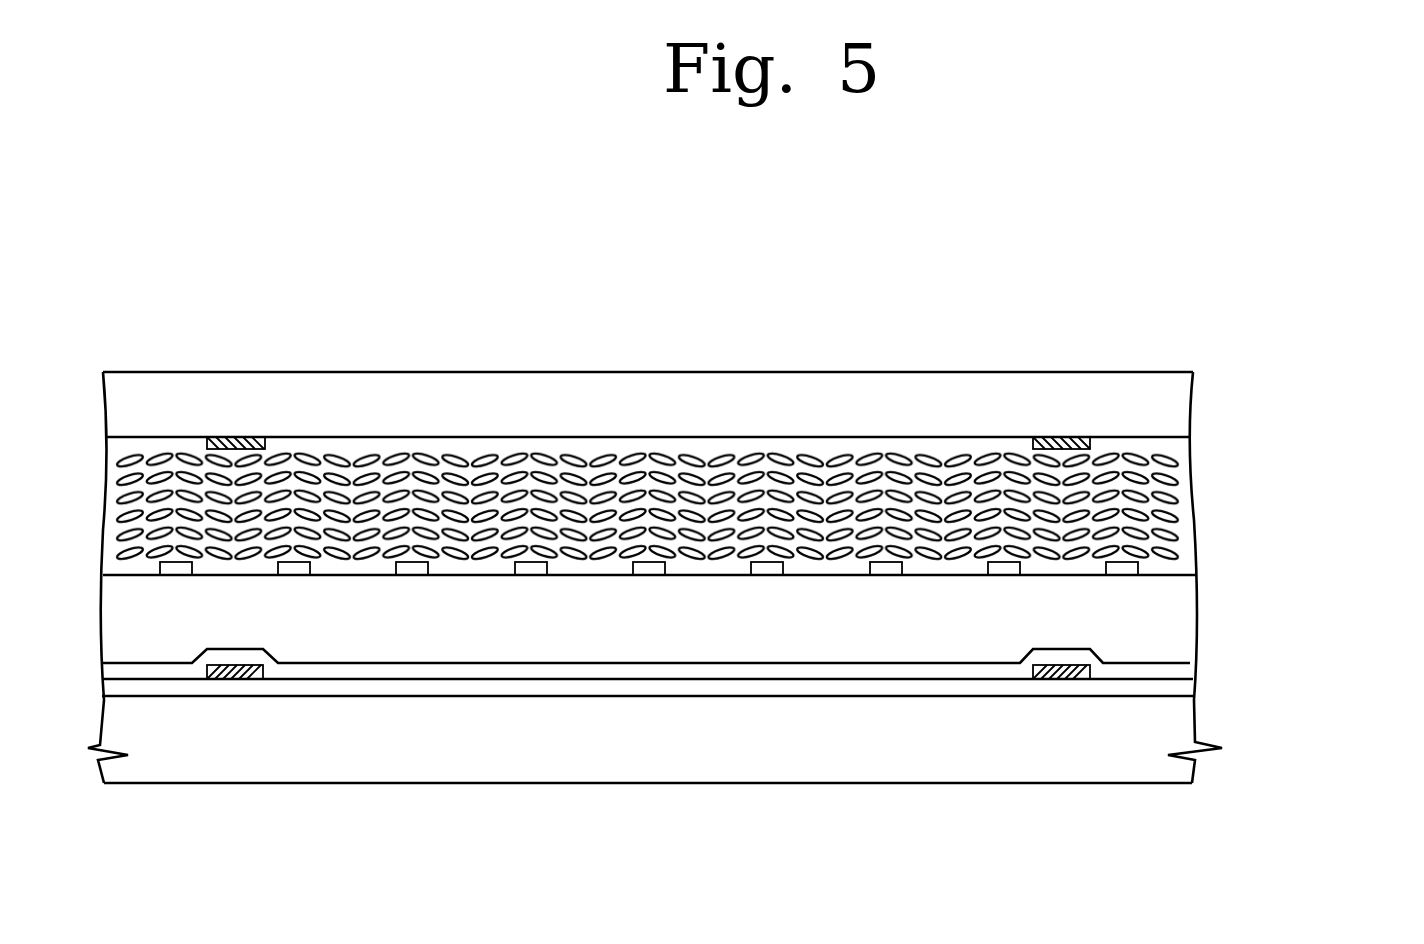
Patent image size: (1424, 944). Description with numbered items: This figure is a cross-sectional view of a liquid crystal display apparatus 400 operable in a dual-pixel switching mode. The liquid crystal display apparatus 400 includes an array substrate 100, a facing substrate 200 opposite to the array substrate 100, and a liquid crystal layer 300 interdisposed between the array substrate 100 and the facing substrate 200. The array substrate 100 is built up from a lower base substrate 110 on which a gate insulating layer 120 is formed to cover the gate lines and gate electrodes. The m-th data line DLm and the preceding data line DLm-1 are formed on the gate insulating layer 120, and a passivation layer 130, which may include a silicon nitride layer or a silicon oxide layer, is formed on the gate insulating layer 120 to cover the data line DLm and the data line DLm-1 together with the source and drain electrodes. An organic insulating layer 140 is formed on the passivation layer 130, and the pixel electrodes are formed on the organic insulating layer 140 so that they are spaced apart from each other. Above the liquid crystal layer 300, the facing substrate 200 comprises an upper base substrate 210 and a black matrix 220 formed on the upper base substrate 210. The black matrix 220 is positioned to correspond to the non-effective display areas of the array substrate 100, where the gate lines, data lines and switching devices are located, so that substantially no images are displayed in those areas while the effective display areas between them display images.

The liquid crystal display apparatus 400 is at (1162, 276).
The facing substrate 200 is at (754, 411).
The upper base substrate 210 is at (1180, 393).
The black matrix 220 is at (1088, 438).
The liquid crystal layer 300 is at (1175, 500).
The array substrate 100 is at (754, 701).
The lower base substrate 110 is at (712, 749).
The gate insulating layer 120 is at (1180, 688).
The passivation layer 130 is at (1180, 673).
The organic insulating layer 140 is at (1180, 638).
The (m-1)th data line DLm-1 is at (233, 679).
The m-th data line DLm is at (1060, 679).